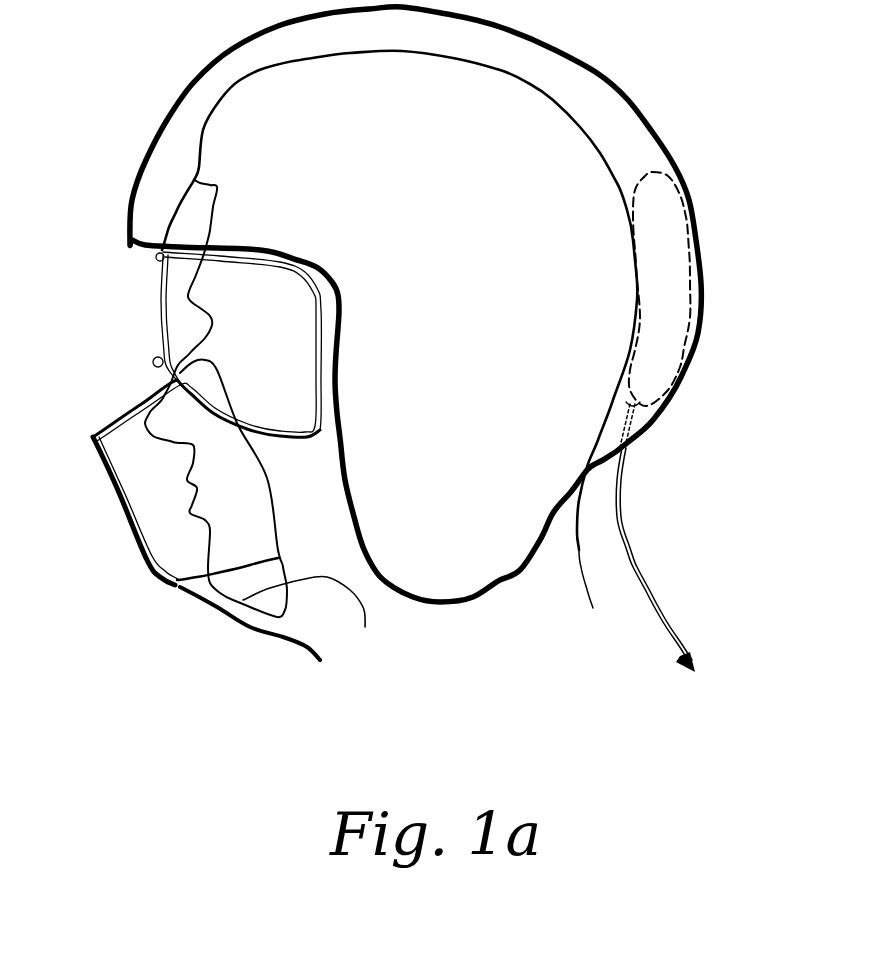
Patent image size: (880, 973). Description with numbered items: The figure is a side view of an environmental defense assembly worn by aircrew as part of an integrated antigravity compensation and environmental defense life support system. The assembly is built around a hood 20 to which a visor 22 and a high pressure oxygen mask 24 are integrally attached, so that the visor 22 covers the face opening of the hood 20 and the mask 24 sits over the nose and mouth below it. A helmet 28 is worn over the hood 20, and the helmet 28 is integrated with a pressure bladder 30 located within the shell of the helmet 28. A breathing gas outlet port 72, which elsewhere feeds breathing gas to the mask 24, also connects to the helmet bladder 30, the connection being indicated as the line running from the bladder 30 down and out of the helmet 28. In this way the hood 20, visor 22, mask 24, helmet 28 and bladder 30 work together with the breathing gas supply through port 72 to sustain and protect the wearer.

The hood 20 is at (175, 218).
The visor 22 is at (155, 316).
The high pressure oxygen mask 24 is at (117, 500).
The helmet 28 is at (222, 55).
The pressure bladder 30 is at (677, 245).
The breathing gas outlet port 72 is at (675, 548).